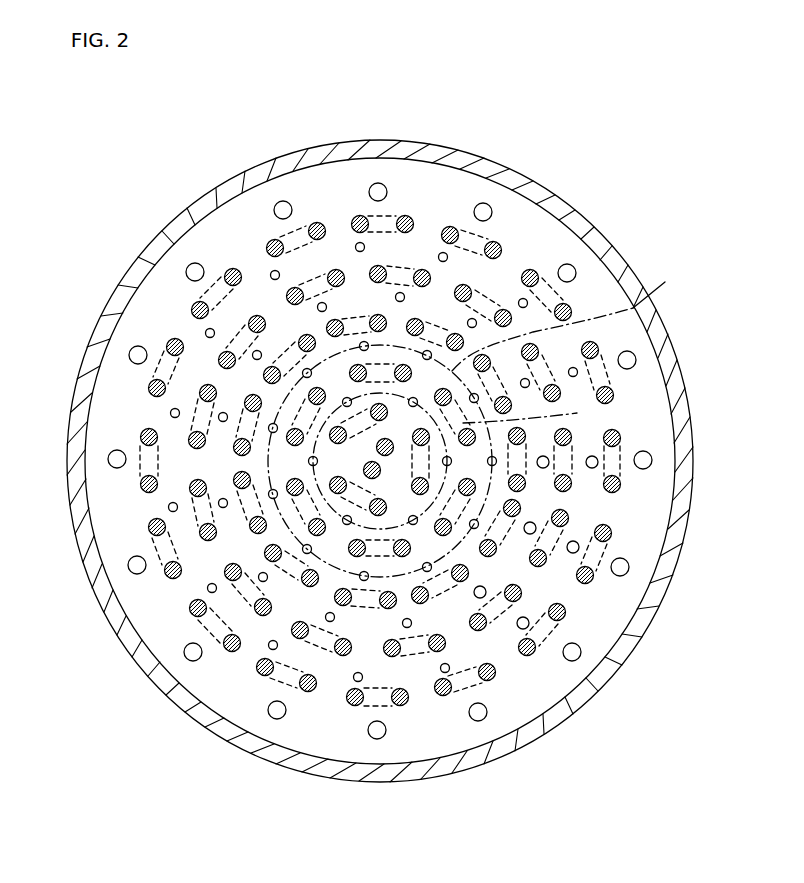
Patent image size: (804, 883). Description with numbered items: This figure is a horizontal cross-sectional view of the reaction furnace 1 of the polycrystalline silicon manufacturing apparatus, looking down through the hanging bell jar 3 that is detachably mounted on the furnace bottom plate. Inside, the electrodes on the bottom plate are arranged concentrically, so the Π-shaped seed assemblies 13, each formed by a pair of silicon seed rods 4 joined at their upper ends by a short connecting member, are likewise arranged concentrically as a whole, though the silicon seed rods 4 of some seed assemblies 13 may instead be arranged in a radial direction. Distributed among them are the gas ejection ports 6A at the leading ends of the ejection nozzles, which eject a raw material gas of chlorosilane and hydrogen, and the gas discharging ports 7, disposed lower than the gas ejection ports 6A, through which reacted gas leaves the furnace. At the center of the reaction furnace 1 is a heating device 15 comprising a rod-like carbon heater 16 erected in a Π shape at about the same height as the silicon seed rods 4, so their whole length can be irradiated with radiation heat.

The reaction furnace 1 is at (660, 165).
The bell jar 3 is at (671, 347).
The silicon seed rods 4 is at (230, 272).
The gas ejection ports 6A is at (358, 247).
The gas discharging ports 7 is at (283, 210).
The seed assembly 13 is at (306, 222).
The heating device 15 is at (400, 437).
The carbon heater 16 is at (364, 470).